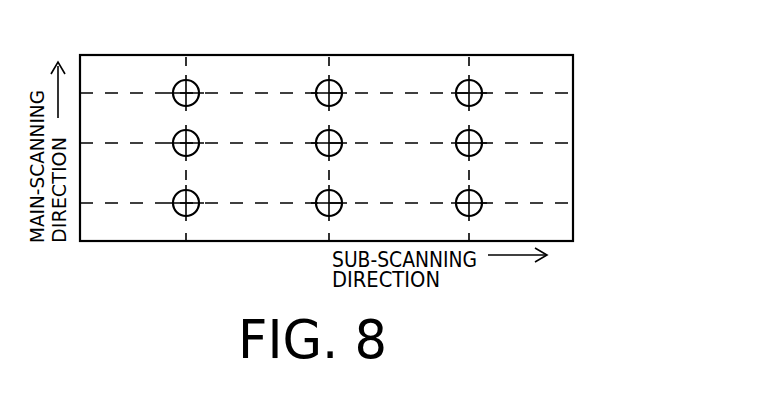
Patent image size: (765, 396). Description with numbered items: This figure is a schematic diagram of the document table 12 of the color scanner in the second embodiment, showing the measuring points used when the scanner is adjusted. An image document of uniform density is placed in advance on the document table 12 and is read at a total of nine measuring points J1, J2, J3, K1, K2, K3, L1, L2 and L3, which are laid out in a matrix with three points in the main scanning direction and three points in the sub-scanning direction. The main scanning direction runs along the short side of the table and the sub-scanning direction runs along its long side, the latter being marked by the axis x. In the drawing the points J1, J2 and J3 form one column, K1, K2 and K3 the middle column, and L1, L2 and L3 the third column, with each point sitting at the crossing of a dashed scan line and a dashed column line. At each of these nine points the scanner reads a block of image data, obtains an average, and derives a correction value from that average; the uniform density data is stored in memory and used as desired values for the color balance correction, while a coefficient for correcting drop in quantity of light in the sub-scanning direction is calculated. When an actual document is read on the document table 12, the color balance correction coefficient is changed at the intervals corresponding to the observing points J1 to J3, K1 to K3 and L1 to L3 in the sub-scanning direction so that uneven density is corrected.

The document table 12 is at (573, 225).
The measuring point J1 is at (195, 84).
The measuring point J2 is at (195, 134).
The measuring point J3 is at (195, 194).
The measuring point K1 is at (338, 84).
The measuring point K2 is at (338, 134).
The measuring point K3 is at (338, 194).
The measuring point L1 is at (478, 84).
The measuring point L2 is at (478, 134).
The measuring point L3 is at (478, 194).
The sub-scanning direction axis x is at (521, 256).